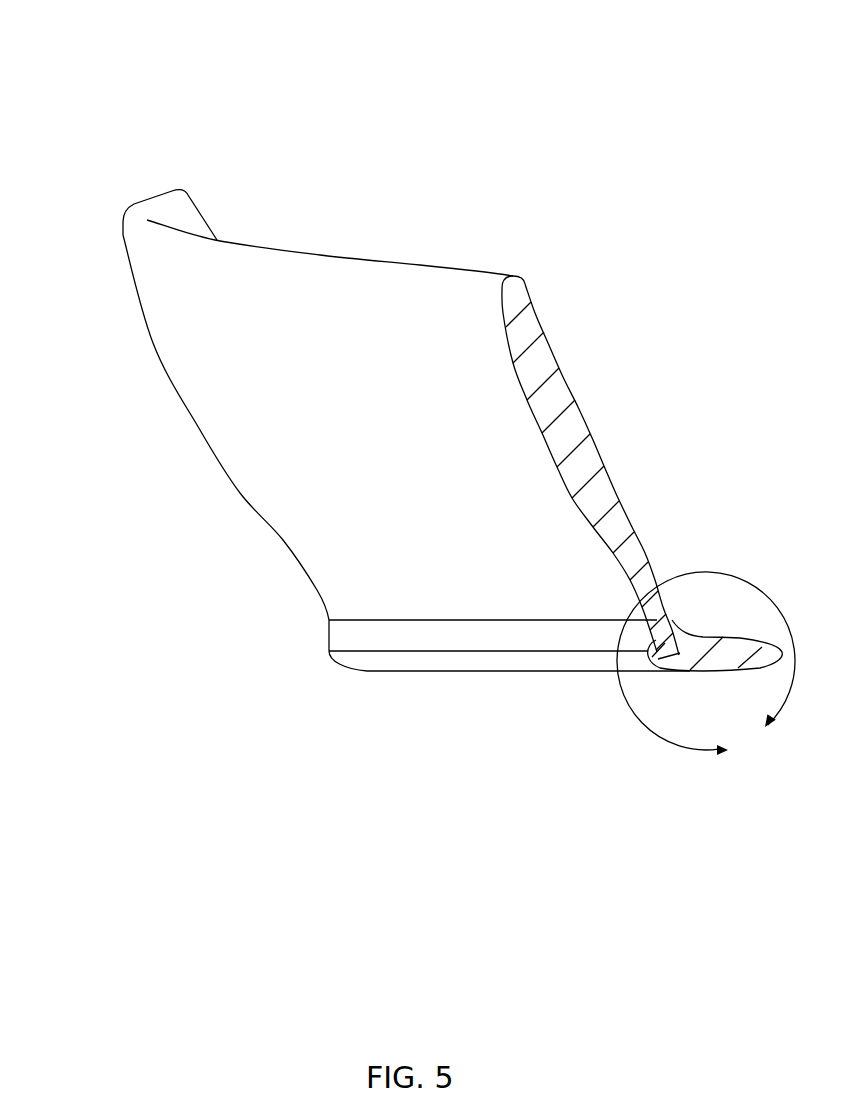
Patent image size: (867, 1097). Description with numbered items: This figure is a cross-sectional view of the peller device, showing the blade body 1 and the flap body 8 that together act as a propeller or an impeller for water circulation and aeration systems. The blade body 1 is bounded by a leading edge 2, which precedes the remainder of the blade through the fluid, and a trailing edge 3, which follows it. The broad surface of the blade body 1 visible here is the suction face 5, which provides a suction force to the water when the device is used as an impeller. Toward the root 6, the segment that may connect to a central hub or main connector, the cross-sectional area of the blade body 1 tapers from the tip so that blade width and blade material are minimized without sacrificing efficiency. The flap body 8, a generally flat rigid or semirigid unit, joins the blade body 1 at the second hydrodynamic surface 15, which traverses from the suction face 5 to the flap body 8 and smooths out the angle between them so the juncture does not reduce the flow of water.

The blade body 1 is at (130, 60).
The leading edge 2 is at (320, 255).
The trailing edge 3 is at (452, 620).
The suction face 5 is at (390, 450).
The root 6 is at (706, 665).
The flap body 8 is at (553, 660).
The second hydrodynamic surface 15 is at (392, 638).